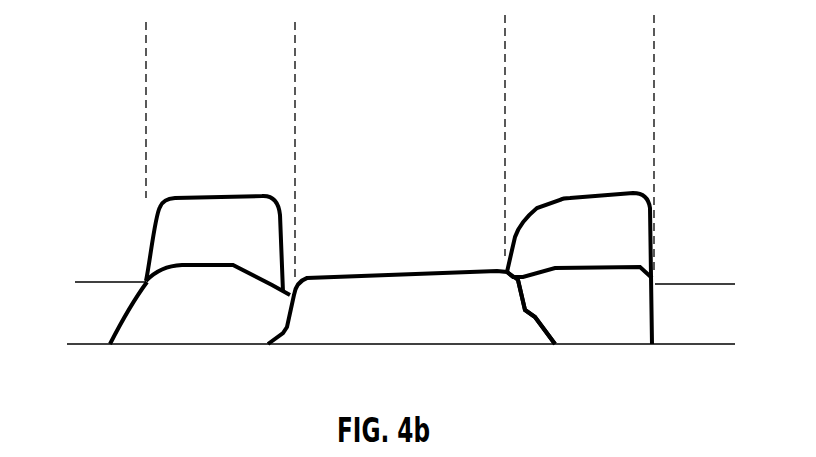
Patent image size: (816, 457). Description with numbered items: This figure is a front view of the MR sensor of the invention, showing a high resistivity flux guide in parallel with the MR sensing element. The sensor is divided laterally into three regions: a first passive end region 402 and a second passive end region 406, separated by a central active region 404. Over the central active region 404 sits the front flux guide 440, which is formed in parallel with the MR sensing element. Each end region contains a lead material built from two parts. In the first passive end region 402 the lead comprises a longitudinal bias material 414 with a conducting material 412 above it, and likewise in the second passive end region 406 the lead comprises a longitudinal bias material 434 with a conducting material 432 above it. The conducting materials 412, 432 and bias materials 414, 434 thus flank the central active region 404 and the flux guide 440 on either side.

The passive end region 402 is at (295, 40).
The central active region 404 is at (505, 40).
The passive end region 406 is at (654, 40).
The conducting material 412 is at (182, 222).
The longitudinal bias material 414 is at (147, 315).
The conducting material 432 is at (637, 223).
The longitudinal bias material 434 is at (627, 310).
The front flux guide 440 is at (452, 318).